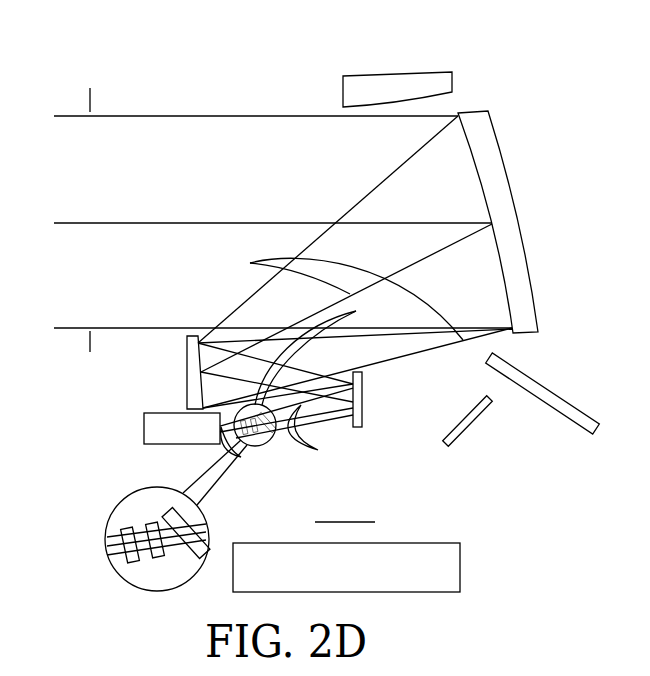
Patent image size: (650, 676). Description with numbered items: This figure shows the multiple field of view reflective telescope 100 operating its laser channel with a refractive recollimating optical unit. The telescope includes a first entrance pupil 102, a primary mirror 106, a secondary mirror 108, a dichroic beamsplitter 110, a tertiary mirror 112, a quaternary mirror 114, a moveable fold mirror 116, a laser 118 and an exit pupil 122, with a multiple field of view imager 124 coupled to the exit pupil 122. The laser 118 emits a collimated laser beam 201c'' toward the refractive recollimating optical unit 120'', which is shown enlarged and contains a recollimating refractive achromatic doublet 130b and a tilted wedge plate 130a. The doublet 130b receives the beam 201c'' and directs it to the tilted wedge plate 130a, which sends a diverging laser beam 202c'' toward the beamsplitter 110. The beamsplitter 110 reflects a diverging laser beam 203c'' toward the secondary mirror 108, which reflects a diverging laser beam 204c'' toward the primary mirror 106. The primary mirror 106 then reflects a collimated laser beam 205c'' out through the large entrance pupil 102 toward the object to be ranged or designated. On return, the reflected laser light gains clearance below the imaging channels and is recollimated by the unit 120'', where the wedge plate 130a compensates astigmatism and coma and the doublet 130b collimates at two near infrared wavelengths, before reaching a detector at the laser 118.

The multiple field of view reflective telescope 100 is at (564, 44).
The first entrance pupil 102 is at (88, 346).
The primary mirror 106 is at (520, 217).
The secondary mirror 108 is at (188, 372).
The beamsplitter 110 is at (362, 385).
The tertiary mirror 112 is at (473, 419).
The quaternary mirror 114 is at (385, 72).
The moveable fold mirror 116 is at (548, 386).
The laser 118 is at (182, 447).
The refractive recollimating optical unit 120'' is at (165, 497).
The exit pupil 122 is at (376, 521).
The multiple field of view imager 124 is at (462, 565).
The tilted wedge plate 130a is at (192, 560).
The recollimating refractive achromatic doublet 130b is at (167, 590).
The collimated laser beam 201c'' is at (260, 452).
The diverging laser beam 202c'' is at (333, 435).
The diverging laser beam 203c'' is at (339, 352).
The diverging laser beam 204c'' is at (324, 294).
The collimated laser beam 205c'' is at (272, 222).